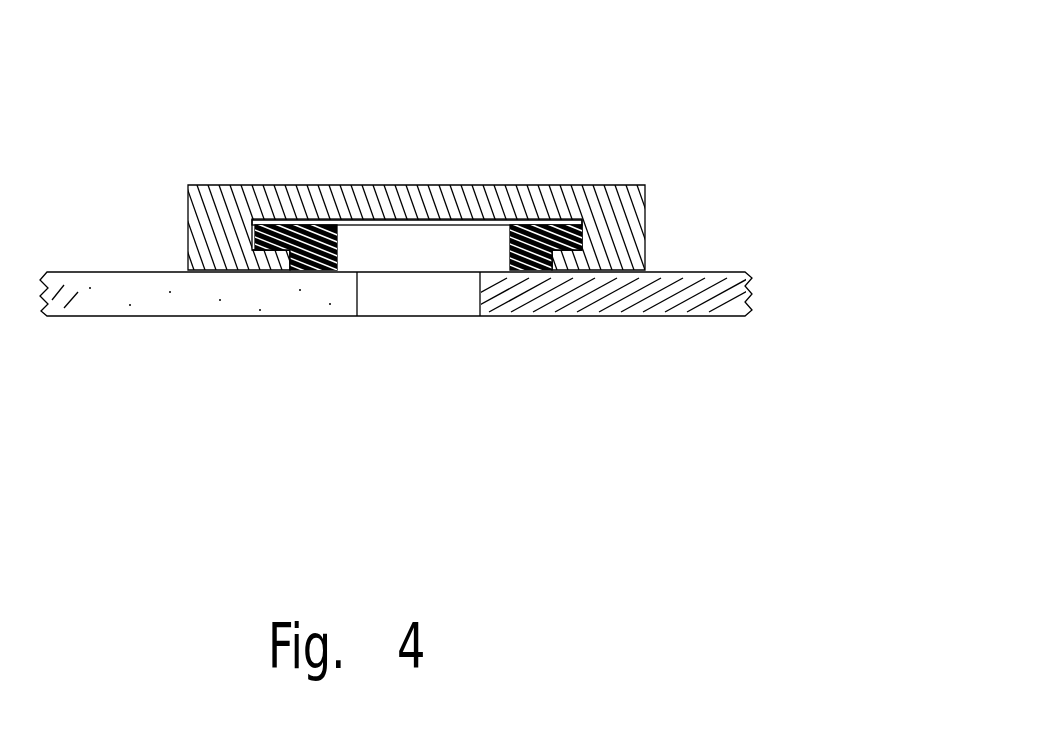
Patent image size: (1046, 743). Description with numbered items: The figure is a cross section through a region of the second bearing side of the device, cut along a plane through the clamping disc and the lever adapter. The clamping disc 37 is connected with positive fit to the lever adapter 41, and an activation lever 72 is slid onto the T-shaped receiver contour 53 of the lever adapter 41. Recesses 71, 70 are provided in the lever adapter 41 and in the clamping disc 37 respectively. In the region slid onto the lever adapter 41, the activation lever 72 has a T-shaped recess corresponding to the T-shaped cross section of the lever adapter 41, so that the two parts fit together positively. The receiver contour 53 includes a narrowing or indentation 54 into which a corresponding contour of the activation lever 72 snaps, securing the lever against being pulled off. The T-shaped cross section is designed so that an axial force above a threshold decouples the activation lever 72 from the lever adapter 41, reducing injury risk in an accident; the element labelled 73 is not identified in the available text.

The clamping disc 37 is at (743, 270).
The recess 70 is at (400, 311).
The activation lever 72 is at (647, 208).
The recess 71 is at (503, 247).
The receiver contour 53 is at (293, 222).
The indentation 54 is at (578, 225).
The cap inner lip 73 is at (258, 218).
The lever adapter 41 is at (563, 268).